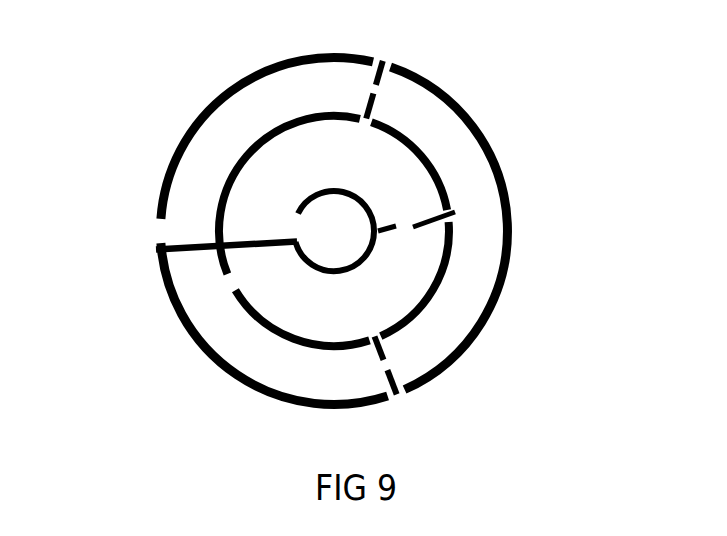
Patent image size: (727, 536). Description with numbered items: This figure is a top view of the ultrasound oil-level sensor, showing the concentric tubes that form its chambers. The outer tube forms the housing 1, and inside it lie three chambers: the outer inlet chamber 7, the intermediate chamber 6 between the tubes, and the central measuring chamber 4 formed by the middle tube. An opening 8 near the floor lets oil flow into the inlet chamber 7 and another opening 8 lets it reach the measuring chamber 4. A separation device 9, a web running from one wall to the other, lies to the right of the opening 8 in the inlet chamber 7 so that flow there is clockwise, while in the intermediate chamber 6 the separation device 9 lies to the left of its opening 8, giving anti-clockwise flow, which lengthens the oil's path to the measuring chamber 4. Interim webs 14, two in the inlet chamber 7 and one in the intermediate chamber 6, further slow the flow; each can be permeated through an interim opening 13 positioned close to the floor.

The housing 1 is at (187, 125).
The measuring chamber 4 is at (335, 230).
The intermediate chamber 6 is at (422, 187).
The inlet chamber 7 is at (270, 382).
The opening 8 is at (153, 232).
The separation device 9 is at (297, 227).
The interim opening 13 is at (372, 90).
The interim web 14 is at (373, 62).